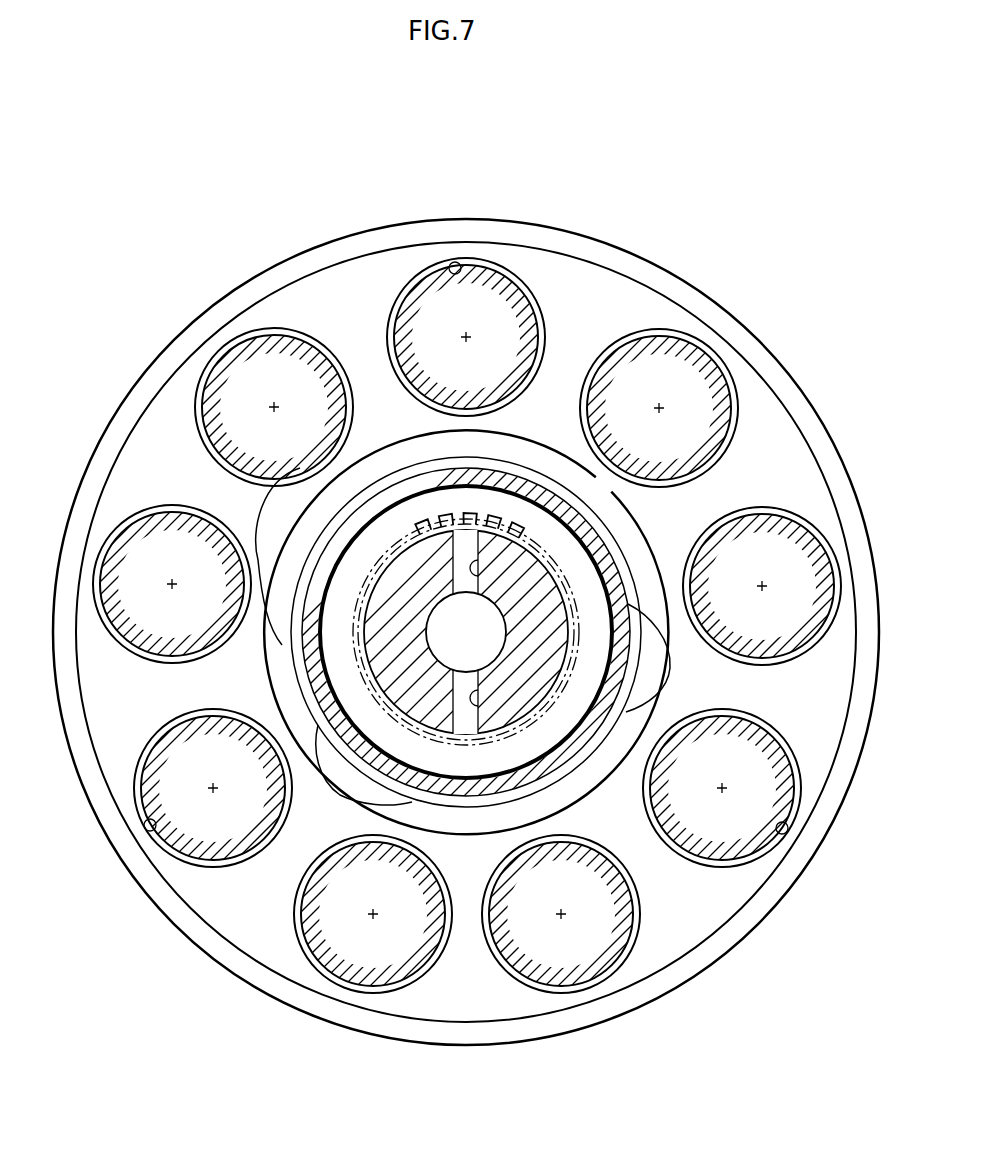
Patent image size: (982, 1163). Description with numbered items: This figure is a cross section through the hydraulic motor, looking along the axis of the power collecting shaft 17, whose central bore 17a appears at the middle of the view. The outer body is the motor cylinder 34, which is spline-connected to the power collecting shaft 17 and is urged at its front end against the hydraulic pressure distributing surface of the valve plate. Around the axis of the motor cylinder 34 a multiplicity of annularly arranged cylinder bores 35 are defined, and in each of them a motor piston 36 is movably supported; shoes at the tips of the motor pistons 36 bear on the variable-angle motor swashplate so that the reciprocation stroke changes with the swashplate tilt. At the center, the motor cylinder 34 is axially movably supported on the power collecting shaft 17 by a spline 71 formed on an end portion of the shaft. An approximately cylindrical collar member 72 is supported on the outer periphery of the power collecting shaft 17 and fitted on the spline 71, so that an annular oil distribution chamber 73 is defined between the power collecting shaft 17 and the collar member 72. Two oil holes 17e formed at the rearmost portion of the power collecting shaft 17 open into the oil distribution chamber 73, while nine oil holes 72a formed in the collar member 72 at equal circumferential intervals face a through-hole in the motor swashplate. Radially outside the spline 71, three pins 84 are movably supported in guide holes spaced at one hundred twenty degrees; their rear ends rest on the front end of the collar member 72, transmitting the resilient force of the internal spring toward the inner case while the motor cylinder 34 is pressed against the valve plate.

The motor cylinder 34 is at (623, 249).
The cylinder bores 35 is at (456, 262).
The motor pistons 36 is at (485, 375).
The spline 71 is at (433, 515).
The collar member 72 is at (613, 542).
The oil holes 72a is at (300, 497).
The oil distribution chamber 73 is at (473, 767).
The pins 84 is at (523, 472).
The power collecting shaft 17 is at (418, 649).
The shaft bore 17a is at (432, 620).
The oil holes 17e is at (480, 576).